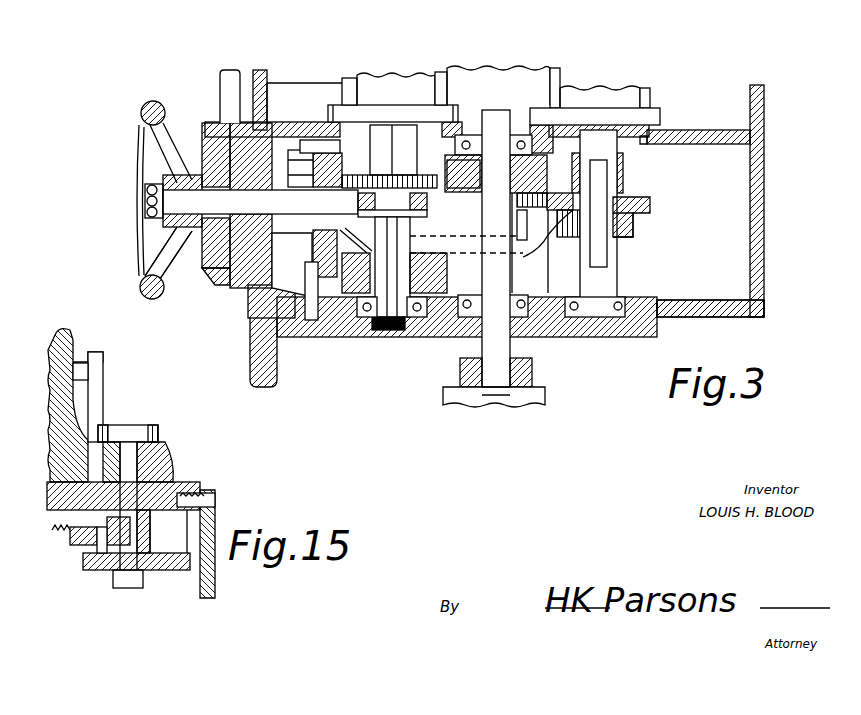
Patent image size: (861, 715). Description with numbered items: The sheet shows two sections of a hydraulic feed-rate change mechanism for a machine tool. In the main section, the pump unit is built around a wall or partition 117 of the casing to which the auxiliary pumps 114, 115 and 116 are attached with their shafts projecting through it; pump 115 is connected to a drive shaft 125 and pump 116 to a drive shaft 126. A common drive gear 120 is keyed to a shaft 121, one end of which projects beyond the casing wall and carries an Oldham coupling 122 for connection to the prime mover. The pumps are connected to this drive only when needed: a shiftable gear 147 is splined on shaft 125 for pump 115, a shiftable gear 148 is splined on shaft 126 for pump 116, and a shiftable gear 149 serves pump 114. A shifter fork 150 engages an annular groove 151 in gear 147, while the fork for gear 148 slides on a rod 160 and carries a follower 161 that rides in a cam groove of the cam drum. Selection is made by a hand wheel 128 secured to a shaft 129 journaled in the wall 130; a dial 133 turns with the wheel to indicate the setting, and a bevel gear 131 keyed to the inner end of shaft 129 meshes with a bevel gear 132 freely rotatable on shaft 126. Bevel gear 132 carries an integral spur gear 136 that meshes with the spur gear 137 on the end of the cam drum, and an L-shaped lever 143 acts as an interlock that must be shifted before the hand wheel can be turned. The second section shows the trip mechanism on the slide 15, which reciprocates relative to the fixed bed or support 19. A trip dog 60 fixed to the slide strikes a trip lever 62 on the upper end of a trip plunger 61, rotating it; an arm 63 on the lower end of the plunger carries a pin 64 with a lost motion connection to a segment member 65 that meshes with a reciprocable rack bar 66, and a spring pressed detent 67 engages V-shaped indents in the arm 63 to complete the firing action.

In FIG. 15, the slide 15 is at (66, 348).
In FIG. 15, the fixed bed or support 19 is at (160, 482).
In FIG. 15, the trip dog 60 is at (98, 393).
In FIG. 15, the trip plunger 61 is at (150, 455).
In FIG. 15, the trip lever 62 is at (125, 425).
In FIG. 15, the arm 63 is at (108, 525).
In FIG. 15, the pin 64 is at (90, 560).
In FIG. 15, the segment member 65 is at (100, 565).
In FIG. 15, the rack bar 66 is at (178, 570).
In FIG. 15, the spring pressed detent 67 is at (78, 545).
In FIG. 3, the auxiliary pump 114 is at (535, 83).
In FIG. 3, the auxiliary pump 115 is at (635, 102).
In FIG. 3, the auxiliary pump 116 is at (358, 88).
In FIG. 3, the wall or partition 117 is at (684, 132).
In FIG. 3, the common drive gear 120 is at (555, 150).
In FIG. 3, the shaft 121 is at (497, 165).
In FIG. 3, the Oldham coupling 122 is at (530, 378).
In FIG. 3, the drive shaft 125 is at (600, 292).
In FIG. 3, the drive shaft 126 is at (394, 330).
In FIG. 3, the hand wheel 128 is at (148, 250).
In FIG. 3, the shaft 129 is at (188, 200).
In FIG. 3, the wall 130 is at (250, 300).
In FIG. 3, the bevel gear 131 is at (330, 150).
In FIG. 3, the bevel gear 132 is at (360, 293).
In FIG. 3, the dial 133 is at (190, 268).
In FIG. 3, the spur gear 136 is at (318, 300).
In FIG. 3, the spur gear 137 is at (305, 300).
In FIG. 3, the L-shaped lever 143 is at (228, 83).
In FIG. 3, the shiftable gear 147 is at (635, 197).
In FIG. 3, the shiftable gear 148 is at (412, 165).
In FIG. 3, the shiftable gear 149 is at (540, 240).
In FIG. 3, the shifter fork 150 is at (524, 245).
In FIG. 3, the annular groove 151 is at (633, 228).
In FIG. 3, the rod 160 is at (258, 312).
In FIG. 3, the follower 161 is at (300, 150).